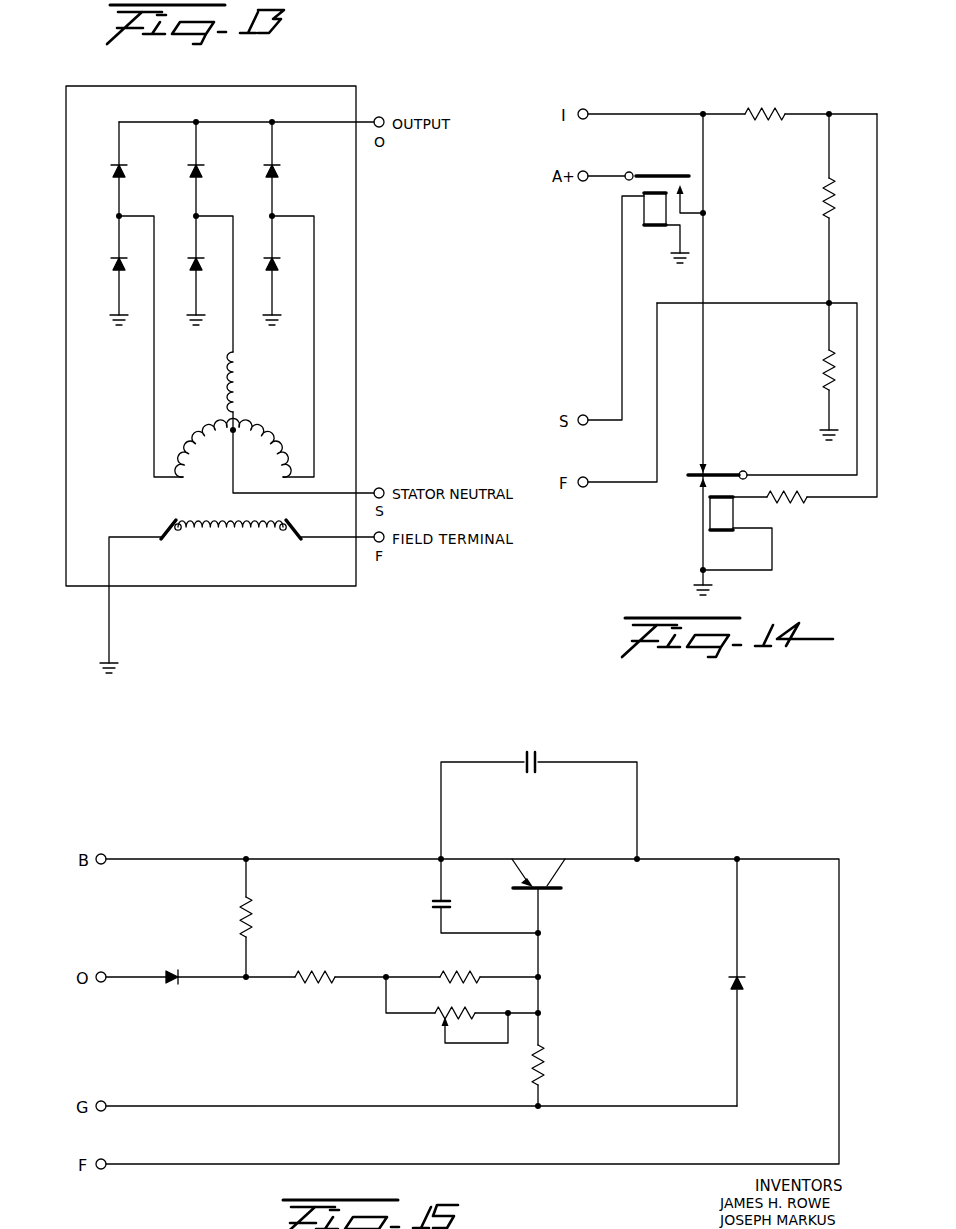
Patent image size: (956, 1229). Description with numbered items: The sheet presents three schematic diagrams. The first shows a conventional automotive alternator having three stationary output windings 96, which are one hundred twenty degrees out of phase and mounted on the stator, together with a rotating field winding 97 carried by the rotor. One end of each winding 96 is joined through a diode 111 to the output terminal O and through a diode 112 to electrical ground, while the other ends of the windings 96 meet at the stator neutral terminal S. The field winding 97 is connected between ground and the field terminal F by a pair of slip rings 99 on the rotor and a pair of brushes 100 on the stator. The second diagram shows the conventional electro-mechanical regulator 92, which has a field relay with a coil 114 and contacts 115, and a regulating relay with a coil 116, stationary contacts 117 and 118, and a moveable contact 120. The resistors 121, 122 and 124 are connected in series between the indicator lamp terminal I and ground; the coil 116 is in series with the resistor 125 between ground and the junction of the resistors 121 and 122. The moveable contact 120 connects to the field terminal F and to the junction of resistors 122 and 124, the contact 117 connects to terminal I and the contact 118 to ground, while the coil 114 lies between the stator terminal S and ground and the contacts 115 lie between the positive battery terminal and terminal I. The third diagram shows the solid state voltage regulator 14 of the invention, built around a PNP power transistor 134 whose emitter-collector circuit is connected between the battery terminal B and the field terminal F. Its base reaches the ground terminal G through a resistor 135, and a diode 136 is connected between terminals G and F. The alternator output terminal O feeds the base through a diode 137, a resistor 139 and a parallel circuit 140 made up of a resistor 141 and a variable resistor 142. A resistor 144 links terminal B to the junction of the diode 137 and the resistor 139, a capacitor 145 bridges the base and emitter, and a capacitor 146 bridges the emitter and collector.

In FIG. 13, the diode 111 is at (190, 168).
In FIG. 13, the diode 112 is at (190, 259).
In FIG. 13, the stationary output windings 96 is at (200, 447).
In FIG. 13, the rotating field winding 97 is at (233, 530).
In FIG. 13, the slip rings 99 is at (178, 531).
In FIG. 13, the brushes 100 is at (170, 526).
In FIG. 14, the electro-mechanical regulator 92 is at (744, 100).
In FIG. 14, the resistor 121 is at (780, 106).
In FIG. 14, the contacts 115 is at (690, 174).
In FIG. 14, the coil 114 is at (655, 208).
In FIG. 14, the resistor 122 is at (826, 217).
In FIG. 14, the resistor 124 is at (826, 359).
In FIG. 14, the stationary contact 117 is at (709, 462).
In FIG. 14, the moveable contact 120 is at (690, 478).
In FIG. 14, the stationary contact 118 is at (700, 491).
In FIG. 14, the coil 116 is at (716, 529).
In FIG. 14, the resistor 125 is at (800, 500).
In FIG. 15, the capacitor 146 is at (539, 757).
In FIG. 15, the solid state voltage regulator 14 is at (669, 831).
In FIG. 15, the capacitor 145 is at (438, 900).
In FIG. 15, the resistor 144 is at (250, 925).
In FIG. 15, the parallel circuit 140 is at (406, 957).
In FIG. 15, the resistor 141 is at (462, 975).
In FIG. 15, the power transistor 134 is at (559, 896).
In FIG. 15, the diode 136 is at (746, 987).
In FIG. 15, the diode 137 is at (168, 984).
In FIG. 15, the resistor 139 is at (312, 986).
In FIG. 15, the variable resistor 142 is at (442, 1019).
In FIG. 15, the resistor 135 is at (542, 1071).